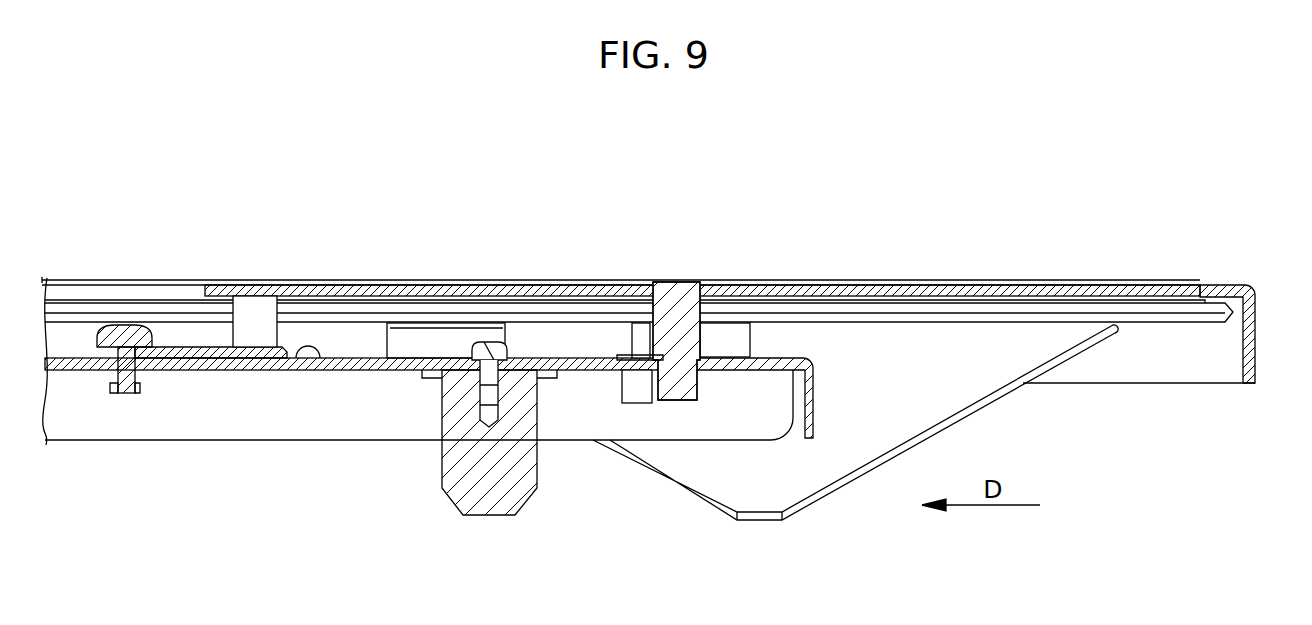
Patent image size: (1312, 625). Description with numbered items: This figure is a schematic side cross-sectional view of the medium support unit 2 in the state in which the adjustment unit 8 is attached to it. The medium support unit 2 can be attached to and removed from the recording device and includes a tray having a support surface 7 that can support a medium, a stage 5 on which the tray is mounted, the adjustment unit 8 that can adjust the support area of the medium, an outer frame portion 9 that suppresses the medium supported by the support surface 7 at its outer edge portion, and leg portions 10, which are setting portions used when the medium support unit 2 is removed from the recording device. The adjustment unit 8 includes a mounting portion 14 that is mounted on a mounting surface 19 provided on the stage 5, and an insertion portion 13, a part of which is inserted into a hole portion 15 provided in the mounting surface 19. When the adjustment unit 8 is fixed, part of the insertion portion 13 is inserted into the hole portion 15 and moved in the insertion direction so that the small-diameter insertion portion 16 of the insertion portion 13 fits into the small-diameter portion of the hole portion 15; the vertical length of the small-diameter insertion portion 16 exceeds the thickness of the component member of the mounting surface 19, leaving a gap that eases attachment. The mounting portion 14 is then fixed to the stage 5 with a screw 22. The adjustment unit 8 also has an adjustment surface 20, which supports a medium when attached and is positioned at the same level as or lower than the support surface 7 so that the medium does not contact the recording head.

The medium support unit 2 is at (952, 152).
The stage 5 is at (356, 420).
The support surface 7 is at (940, 282).
The adjustment unit 8 is at (441, 284).
The outer frame portion 9 is at (1255, 345).
The leg portions 10 is at (755, 495).
The insertion portion 13 is at (679, 297).
The mounting portion 14 is at (179, 359).
The hole portion 15 is at (757, 385).
The small-diameter insertion portion 16 is at (665, 362).
The mounting surface 19 is at (299, 350).
The adjustment surface 20 is at (247, 295).
The screw 22 is at (121, 328).